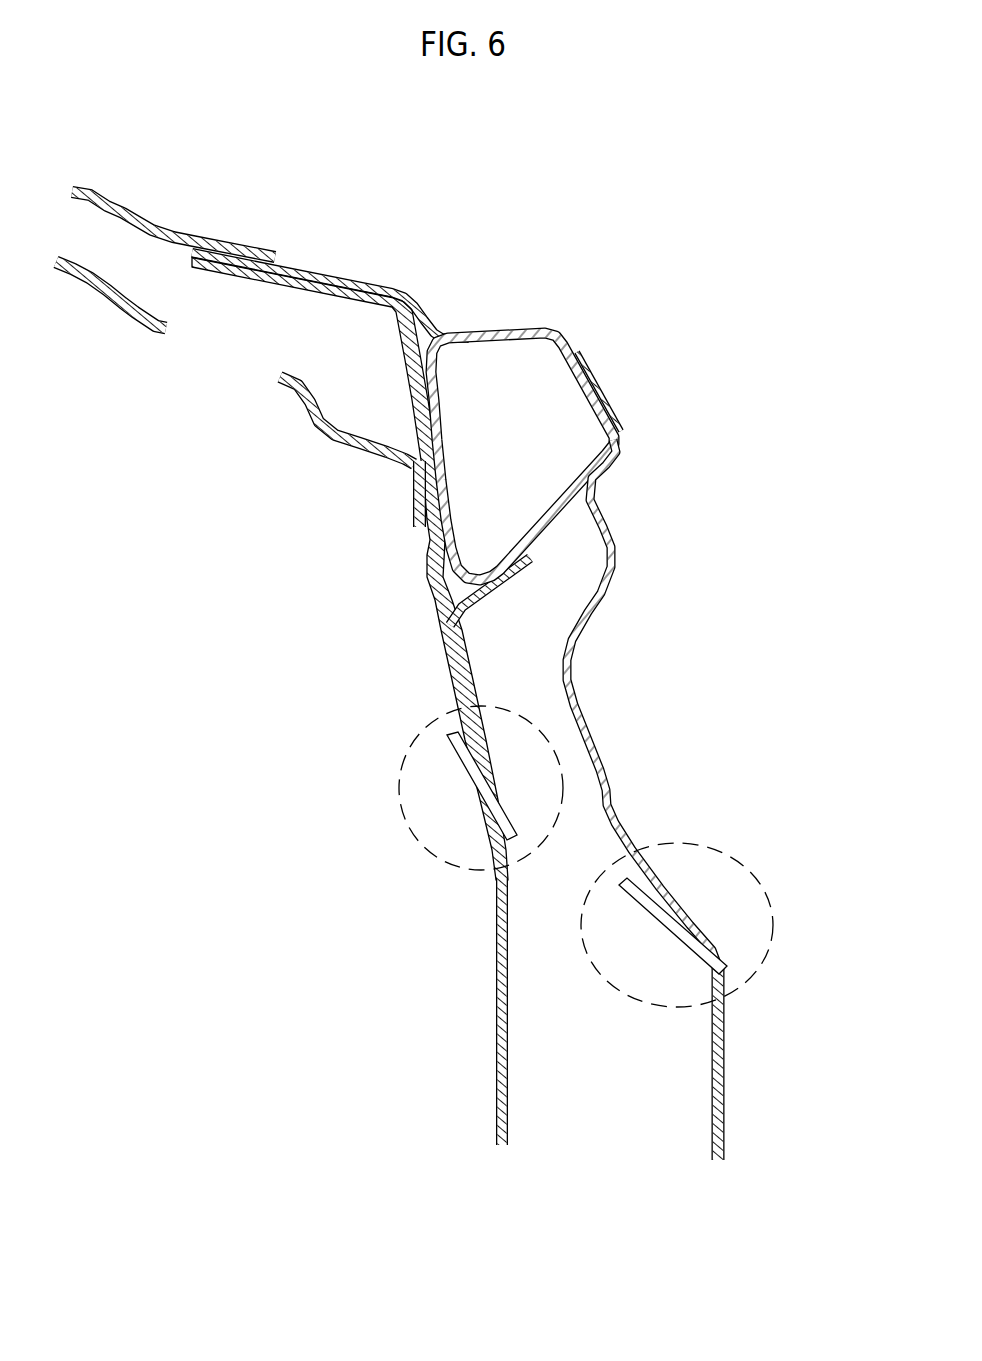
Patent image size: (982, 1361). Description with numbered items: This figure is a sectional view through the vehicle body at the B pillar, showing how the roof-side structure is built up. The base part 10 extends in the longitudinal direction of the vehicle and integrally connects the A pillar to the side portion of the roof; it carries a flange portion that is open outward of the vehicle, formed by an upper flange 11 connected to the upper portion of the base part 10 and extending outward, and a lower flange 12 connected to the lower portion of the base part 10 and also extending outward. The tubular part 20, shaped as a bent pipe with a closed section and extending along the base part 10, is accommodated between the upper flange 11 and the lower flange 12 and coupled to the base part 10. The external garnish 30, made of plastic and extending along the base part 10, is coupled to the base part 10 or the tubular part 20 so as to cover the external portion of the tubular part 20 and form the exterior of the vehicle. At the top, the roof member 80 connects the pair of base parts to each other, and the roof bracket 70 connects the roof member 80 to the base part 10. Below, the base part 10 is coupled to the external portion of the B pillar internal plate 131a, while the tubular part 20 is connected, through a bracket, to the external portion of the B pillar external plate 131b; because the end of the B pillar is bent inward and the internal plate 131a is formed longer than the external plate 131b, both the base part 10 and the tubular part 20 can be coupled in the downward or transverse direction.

The base part 10 is at (427, 578).
The upper flange 11 is at (435, 335).
The lower flange 12 is at (497, 600).
The tubular part 20 is at (558, 338).
The external garnish 30 is at (612, 540).
The roof bracket 70 is at (283, 382).
The roof member 80 is at (153, 227).
The B pillar internal plate 131a is at (500, 1050).
The B pillar external plate 131b is at (718, 1058).